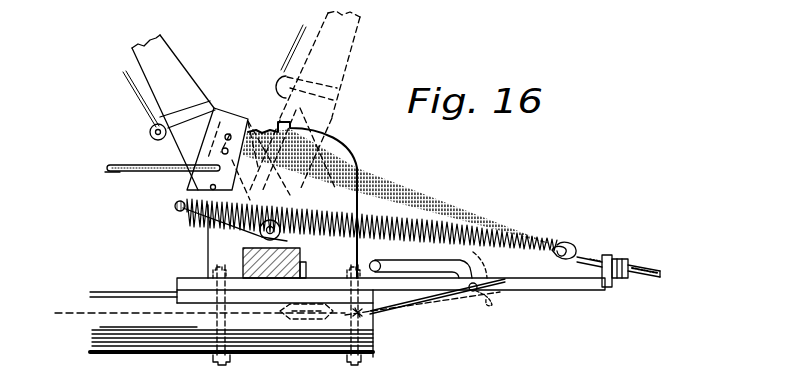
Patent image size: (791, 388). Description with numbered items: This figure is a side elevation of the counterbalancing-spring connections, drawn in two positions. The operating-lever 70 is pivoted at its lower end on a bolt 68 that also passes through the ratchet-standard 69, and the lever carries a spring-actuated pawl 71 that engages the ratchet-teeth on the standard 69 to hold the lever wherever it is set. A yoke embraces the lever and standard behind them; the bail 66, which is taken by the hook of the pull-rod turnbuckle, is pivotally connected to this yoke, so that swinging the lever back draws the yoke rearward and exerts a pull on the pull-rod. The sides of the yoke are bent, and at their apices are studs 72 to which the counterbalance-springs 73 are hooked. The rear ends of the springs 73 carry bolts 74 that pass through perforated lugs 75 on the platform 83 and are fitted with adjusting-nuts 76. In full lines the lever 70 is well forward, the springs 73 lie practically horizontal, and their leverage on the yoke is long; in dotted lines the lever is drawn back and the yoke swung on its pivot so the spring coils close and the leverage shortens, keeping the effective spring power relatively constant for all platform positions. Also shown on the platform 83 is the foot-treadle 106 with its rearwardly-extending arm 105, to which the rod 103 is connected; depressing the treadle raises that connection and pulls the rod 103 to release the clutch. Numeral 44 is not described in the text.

The operating-lever 70 is at (186, 78).
The spring-actuated pawl 71 is at (185, 147).
The bail 66 is at (105, 173).
The studs 72 is at (176, 209).
The counterbalance-springs 73 is at (303, 221).
The ratchet-standard 69 is at (358, 163).
The bolt 68 is at (288, 240).
The foot-treadle 106 is at (401, 270).
The rearwardly-extending arm 105 is at (500, 283).
The perforated lugs 75 is at (609, 255).
The bolts 74 is at (643, 268).
The adjusting-nuts 76 is at (624, 281).
The platform 83 is at (410, 283).
The rod 103 is at (58, 314).
The frame rail 44 is at (287, 357).